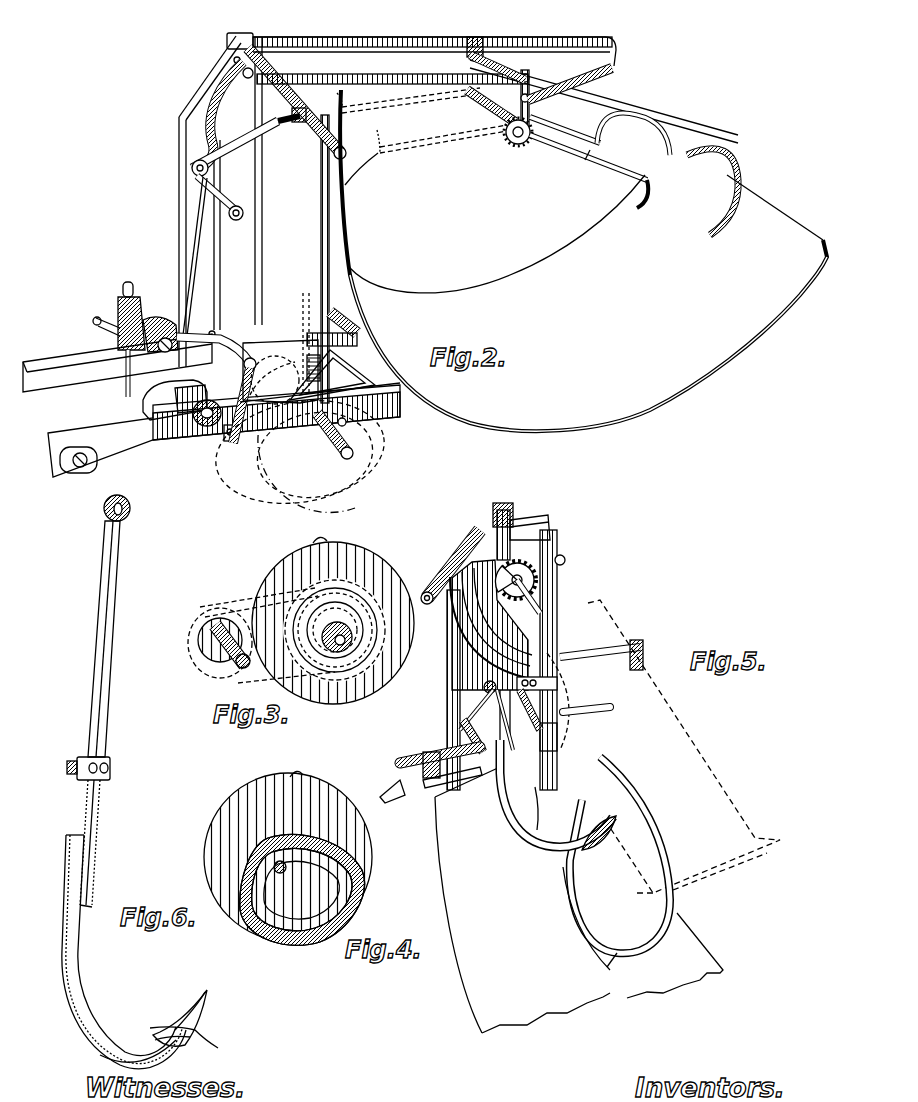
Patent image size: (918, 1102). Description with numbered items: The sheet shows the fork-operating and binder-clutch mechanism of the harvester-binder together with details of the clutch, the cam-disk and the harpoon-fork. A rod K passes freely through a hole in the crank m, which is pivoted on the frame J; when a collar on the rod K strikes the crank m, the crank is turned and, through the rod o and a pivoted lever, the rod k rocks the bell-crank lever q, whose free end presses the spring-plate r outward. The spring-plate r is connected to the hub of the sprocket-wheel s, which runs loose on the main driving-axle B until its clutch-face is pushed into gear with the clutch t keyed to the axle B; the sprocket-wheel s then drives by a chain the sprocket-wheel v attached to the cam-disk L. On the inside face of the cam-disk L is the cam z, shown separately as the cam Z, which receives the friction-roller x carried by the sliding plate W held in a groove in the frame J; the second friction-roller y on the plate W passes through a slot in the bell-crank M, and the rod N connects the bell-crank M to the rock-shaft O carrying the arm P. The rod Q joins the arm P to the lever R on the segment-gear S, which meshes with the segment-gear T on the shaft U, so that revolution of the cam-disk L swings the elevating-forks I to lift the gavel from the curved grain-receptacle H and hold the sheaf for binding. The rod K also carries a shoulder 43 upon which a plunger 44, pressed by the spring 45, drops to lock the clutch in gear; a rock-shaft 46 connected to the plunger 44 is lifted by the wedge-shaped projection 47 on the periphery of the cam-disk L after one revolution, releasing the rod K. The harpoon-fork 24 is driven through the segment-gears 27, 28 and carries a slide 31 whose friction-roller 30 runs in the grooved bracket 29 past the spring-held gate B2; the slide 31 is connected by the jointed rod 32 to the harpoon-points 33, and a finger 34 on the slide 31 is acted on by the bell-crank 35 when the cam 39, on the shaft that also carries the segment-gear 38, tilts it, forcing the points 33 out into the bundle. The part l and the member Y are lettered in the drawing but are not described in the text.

In FIG. 2, the rod Q is at (434, 60).
In FIG. 2, the lever R is at (570, 96).
In FIG. 2, the arm P is at (224, 116).
In FIG. 2, the rock-shaft O is at (249, 164).
In FIG. 2, the rod N is at (190, 272).
In FIG. 2, the rod o is at (212, 331).
In FIG. 2, the crank m is at (110, 322).
In FIG. 2, the frame J is at (103, 378).
In FIG. 2, the rod k is at (178, 384).
In FIG. 2, the bell-crank lever q is at (175, 400).
In FIG. 2, the spring-plate r is at (170, 428).
In FIG. 2, the main driving-axle B is at (208, 428).
In FIG. 3, the main driving-axle B is at (240, 665).
In FIG. 2, the friction-roller y is at (226, 441).
In FIG. 2, the sliding plate W is at (237, 447).
In FIG. 2, the bell-crank M is at (280, 371).
In FIG. 2, the shoulder 43 is at (275, 380).
In FIG. 2, the bolt l is at (330, 293).
In FIG. 2, the plunger 44 is at (357, 320).
In FIG. 2, the rock-shaft 46 is at (357, 338).
In FIG. 2, the spring 45 is at (327, 370).
In FIG. 2, the rod K is at (320, 392).
In FIG. 2, the friction-roller x is at (346, 425).
In FIG. 2, the cam z is at (300, 452).
In FIG. 2, the shaft U is at (424, 120).
In FIG. 2, the segment-gear S is at (496, 95).
In FIG. 2, the segment-gear T is at (516, 140).
In FIG. 2, the elevating-forks I is at (591, 140).
In FIG. 2, the curved grain-receptacle H is at (582, 260).
In FIG. 3, the cam-disk L is at (333, 623).
In FIG. 4, the cam-disk L is at (288, 857).
In FIG. 3, the sprocket-wheel v is at (297, 656).
In FIG. 3, the wedge-shaped projection 47 is at (324, 545).
In FIG. 4, the wedge-shaped projection 47 is at (300, 775).
In FIG. 3, the sprocket-wheel s is at (261, 630).
In FIG. 3, the clutch t is at (220, 665).
In FIG. 4, the cam Z is at (362, 900).
In FIG. 5, the segment-gear 28 is at (523, 531).
In FIG. 5, the gate B2 is at (450, 558).
In FIG. 5, the bracket 29 is at (460, 550).
In FIG. 5, the segment-gear 27 is at (517, 587).
In FIG. 5, the slide 31 is at (557, 684).
In FIG. 6, the slide 31 is at (83, 827).
In FIG. 5, the bell-crank 35 is at (486, 715).
In FIG. 5, the cam 39 is at (484, 740).
In FIG. 5, the finger 34 is at (528, 718).
In FIG. 6, the finger 34 is at (92, 852).
In FIG. 5, the segment-gear 38 is at (468, 763).
In FIG. 5, the fender Y is at (664, 838).
In FIG. 5, the harpoon-fork 24 is at (533, 838).
In FIG. 6, the harpoon-fork 24 is at (96, 1032).
In FIG. 5, the harpoon-points 33 is at (592, 843).
In FIG. 6, the harpoon-points 33 is at (200, 1030).
In FIG. 6, the friction-roller 30 is at (70, 760).
In FIG. 6, the jointed rod 32 is at (78, 948).